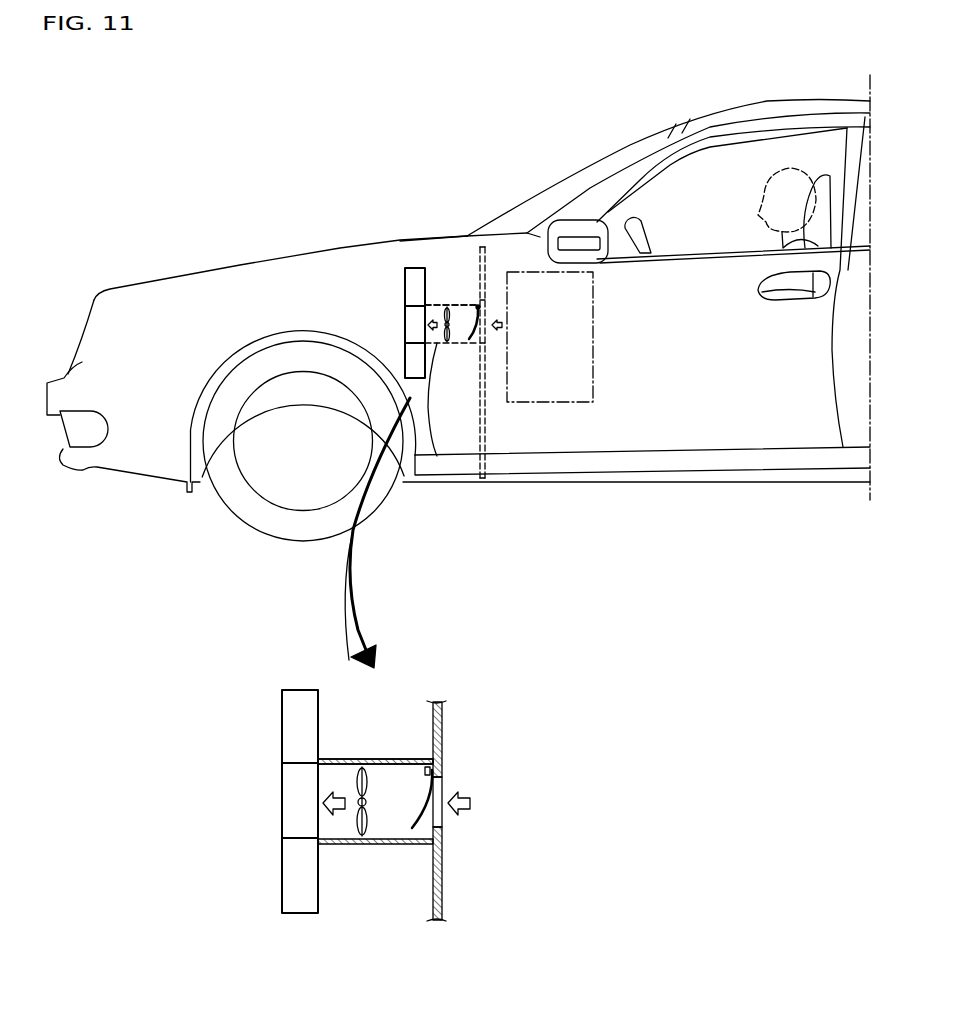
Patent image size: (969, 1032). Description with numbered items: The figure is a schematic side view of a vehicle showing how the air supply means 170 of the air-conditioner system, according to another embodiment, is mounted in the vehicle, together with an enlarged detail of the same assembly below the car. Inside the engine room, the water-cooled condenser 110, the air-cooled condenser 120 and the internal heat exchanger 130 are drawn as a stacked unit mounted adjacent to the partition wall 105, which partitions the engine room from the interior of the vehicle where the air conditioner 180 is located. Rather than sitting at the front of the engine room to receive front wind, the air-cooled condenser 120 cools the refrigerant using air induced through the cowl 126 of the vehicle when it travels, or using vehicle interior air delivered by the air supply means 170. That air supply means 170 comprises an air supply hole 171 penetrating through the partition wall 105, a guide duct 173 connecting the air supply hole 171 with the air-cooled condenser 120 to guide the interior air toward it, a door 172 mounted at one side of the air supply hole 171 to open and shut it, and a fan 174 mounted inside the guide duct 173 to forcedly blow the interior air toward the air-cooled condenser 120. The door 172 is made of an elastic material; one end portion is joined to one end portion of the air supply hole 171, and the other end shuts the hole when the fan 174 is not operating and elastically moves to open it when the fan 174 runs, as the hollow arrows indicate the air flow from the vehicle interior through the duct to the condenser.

The partition wall 105 is at (486, 422).
The water-cooled condenser 110 is at (412, 276).
The air-cooled condenser 120 is at (412, 311).
The cowl 126 is at (428, 250).
The internal heat exchanger 130 is at (412, 346).
The air supply means 170 is at (450, 353).
The air supply hole 171 is at (488, 324).
The door 172 is at (477, 306).
The guide duct 173 is at (447, 305).
The fan 174 is at (438, 470).
The air conditioner 180 is at (508, 272).